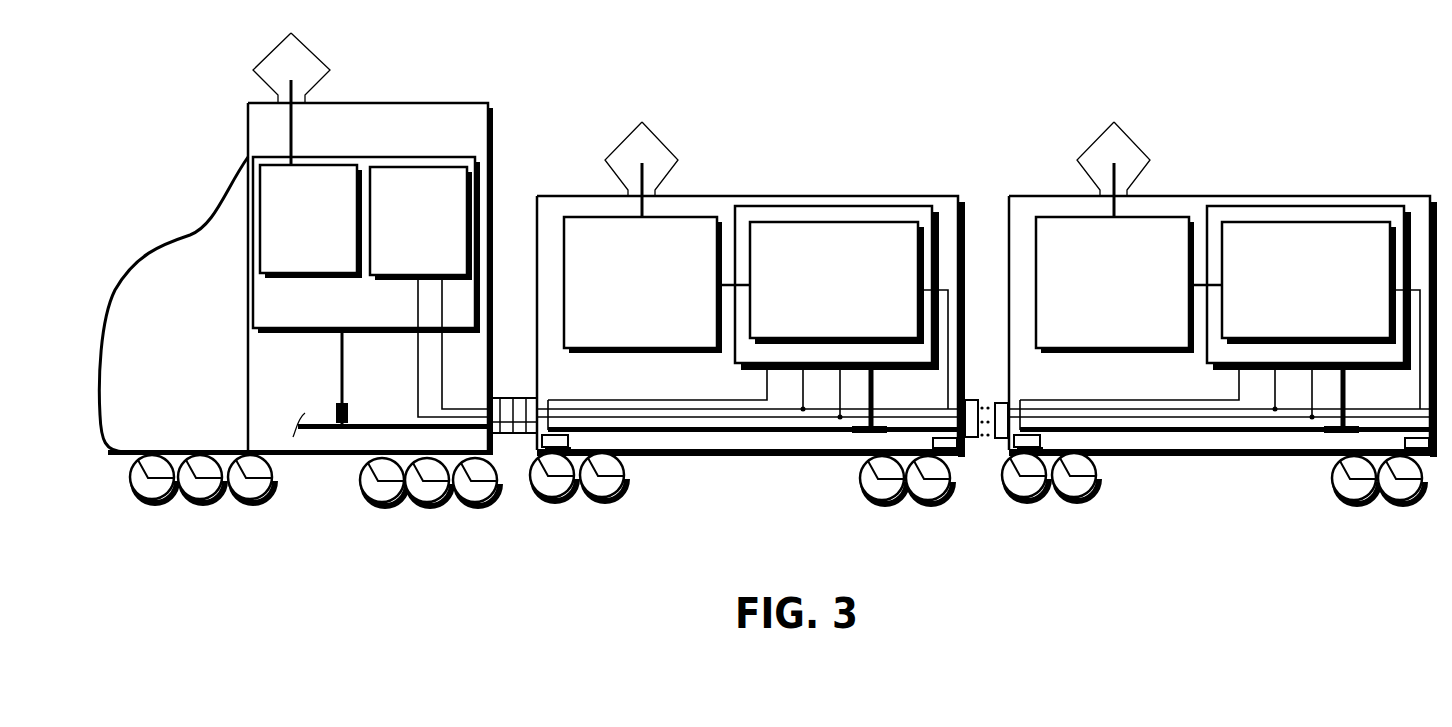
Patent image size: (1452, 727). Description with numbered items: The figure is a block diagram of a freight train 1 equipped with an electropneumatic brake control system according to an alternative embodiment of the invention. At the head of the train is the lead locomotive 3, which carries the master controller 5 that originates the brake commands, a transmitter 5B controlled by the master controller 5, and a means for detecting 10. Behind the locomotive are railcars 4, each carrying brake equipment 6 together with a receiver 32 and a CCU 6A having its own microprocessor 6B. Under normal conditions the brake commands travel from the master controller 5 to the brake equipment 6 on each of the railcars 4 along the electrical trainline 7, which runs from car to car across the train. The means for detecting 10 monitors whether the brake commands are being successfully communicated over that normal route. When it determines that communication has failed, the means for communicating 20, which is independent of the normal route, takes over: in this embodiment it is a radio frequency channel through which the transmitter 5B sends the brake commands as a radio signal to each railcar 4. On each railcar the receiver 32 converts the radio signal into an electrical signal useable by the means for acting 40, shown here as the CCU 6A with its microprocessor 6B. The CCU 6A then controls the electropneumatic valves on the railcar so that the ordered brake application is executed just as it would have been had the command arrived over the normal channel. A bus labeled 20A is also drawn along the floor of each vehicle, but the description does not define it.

The freight train 1 is at (970, 138).
The lead locomotive 3 is at (352, 100).
The railcar 4 is at (746, 196).
The master controller 5 is at (440, 157).
The transmitter 5B is at (325, 258).
The brake equipment 6 is at (820, 439).
The CCU 6A is at (828, 206).
The microprocessor 6B is at (848, 316).
The electrical trainline 7 is at (473, 432).
The means for detecting 10 is at (427, 258).
The means for communicating 20 is at (396, 93).
The power bus 20A is at (312, 432).
The receiver 32 is at (657, 300).
The means for acting 40 is at (716, 364).